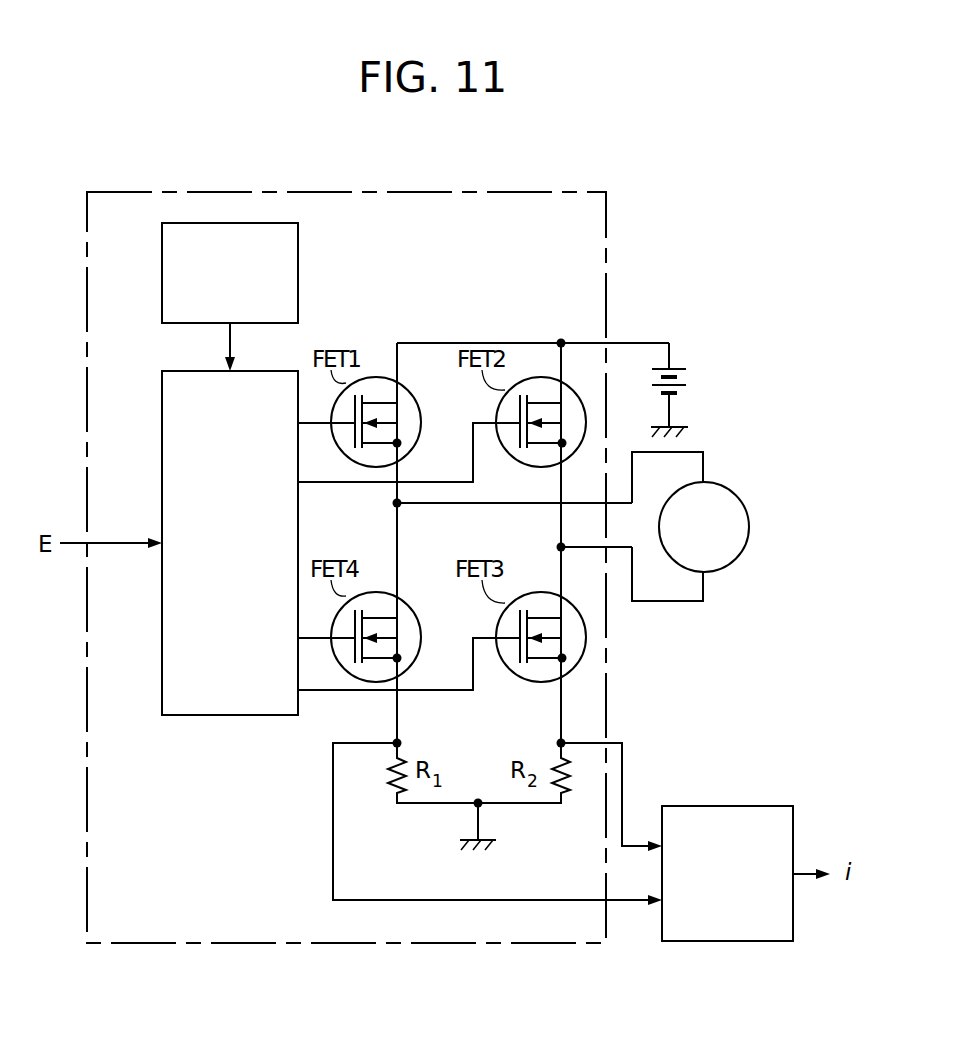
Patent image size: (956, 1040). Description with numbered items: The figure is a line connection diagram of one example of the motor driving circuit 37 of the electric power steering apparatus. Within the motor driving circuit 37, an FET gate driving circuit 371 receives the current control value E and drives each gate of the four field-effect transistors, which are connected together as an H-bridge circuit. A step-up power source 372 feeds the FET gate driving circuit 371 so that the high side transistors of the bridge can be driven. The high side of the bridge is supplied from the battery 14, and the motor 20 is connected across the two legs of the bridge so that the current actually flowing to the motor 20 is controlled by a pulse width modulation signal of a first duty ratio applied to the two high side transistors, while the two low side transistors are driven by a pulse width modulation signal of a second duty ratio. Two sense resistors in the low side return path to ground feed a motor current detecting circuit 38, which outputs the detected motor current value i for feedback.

The motor driving circuit 37 is at (312, 943).
The FET gate driving circuit 371 is at (162, 443).
The step-up power source 372 is at (298, 233).
The battery 14 is at (688, 378).
The motor 20 is at (735, 557).
The motor current detecting circuit 38 is at (720, 806).